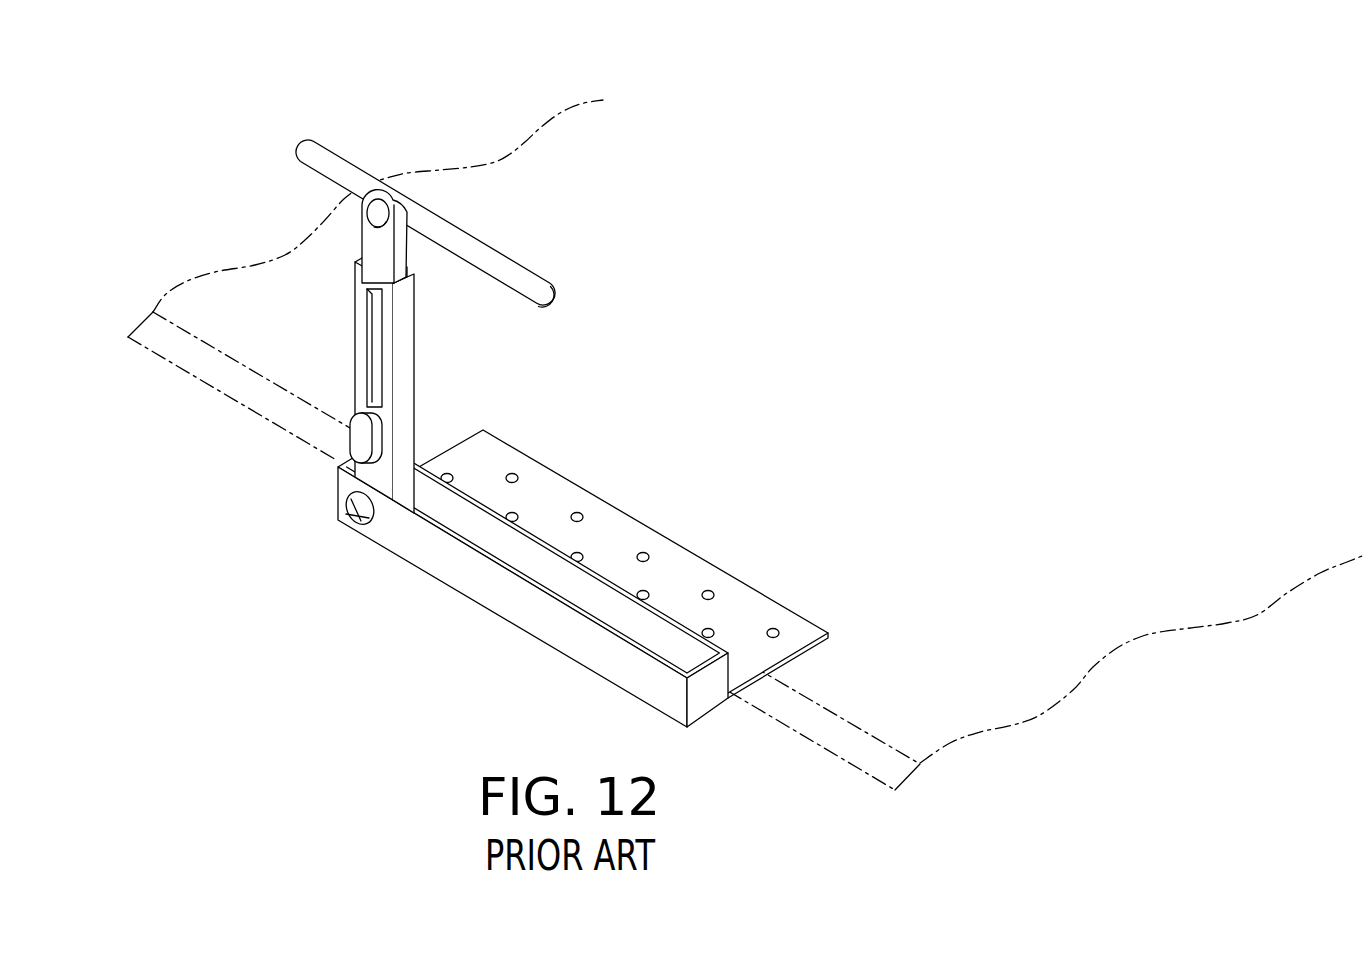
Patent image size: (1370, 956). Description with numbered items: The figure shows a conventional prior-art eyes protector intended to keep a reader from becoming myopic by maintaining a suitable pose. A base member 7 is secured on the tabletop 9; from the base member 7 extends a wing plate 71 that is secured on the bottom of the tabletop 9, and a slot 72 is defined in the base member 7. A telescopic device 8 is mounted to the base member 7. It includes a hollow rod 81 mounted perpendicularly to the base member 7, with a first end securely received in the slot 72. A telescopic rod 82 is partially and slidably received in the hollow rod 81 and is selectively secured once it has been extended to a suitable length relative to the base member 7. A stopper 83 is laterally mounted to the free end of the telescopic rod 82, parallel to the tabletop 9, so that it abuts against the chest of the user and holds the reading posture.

The base member 7 is at (613, 525).
The wing plate 71 is at (763, 617).
The slot 72 is at (548, 621).
The telescopic device 8 is at (519, 290).
The hollow rod 81 is at (400, 362).
The telescopic rod 82 is at (372, 242).
The stopper 83 is at (347, 185).
The tabletop 9 is at (1080, 640).